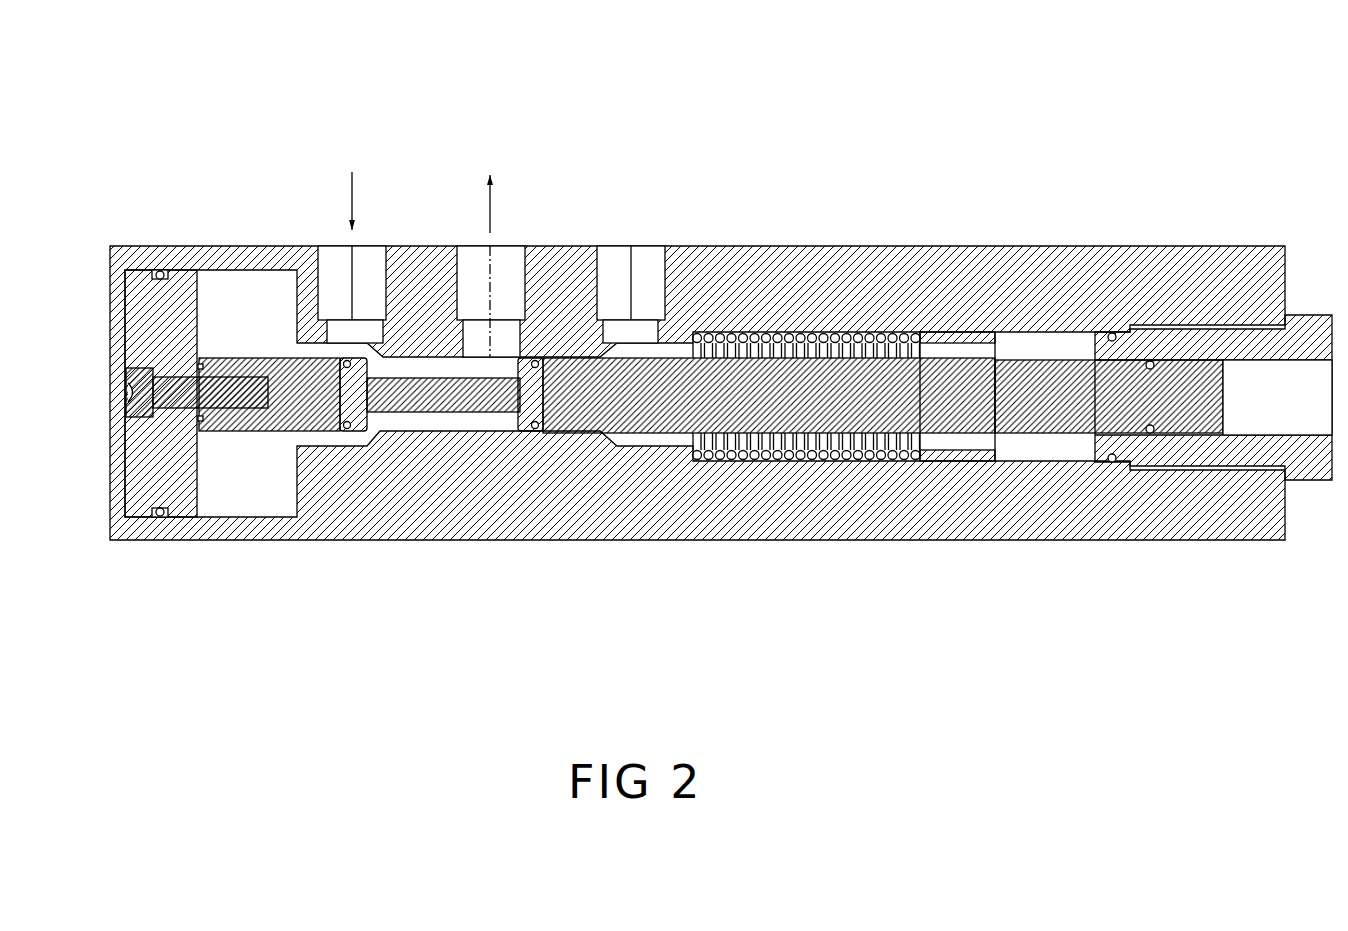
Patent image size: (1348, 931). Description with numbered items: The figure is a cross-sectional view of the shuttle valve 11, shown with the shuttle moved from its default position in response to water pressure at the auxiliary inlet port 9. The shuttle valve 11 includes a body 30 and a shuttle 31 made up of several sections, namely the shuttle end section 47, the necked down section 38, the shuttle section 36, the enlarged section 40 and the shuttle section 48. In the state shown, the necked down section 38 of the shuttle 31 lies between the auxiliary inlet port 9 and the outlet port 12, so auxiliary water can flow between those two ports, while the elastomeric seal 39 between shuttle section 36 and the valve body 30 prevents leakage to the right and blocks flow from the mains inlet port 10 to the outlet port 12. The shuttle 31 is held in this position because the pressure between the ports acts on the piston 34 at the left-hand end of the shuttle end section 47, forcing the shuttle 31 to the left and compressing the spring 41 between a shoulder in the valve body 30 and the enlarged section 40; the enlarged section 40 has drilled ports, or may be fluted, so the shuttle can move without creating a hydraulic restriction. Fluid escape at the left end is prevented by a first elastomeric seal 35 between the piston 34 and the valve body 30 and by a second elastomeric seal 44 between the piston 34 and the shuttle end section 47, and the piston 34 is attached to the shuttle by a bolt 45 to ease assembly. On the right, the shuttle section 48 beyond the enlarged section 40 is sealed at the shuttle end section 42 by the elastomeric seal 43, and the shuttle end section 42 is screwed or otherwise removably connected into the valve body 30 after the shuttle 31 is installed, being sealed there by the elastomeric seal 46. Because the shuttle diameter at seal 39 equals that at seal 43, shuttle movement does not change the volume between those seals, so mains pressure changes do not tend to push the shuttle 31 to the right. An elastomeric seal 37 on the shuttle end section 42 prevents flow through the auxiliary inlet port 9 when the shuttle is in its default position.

The shuttle valve 11 is at (693, 48).
The valve body 30 is at (112, 243).
The auxiliary inlet port 9 is at (370, 246).
The outlet port 12 is at (495, 246).
The mains inlet port 10 is at (633, 246).
The piston 34 is at (163, 300).
The first elastomeric seal 35 is at (158, 514).
The second elastomeric seal 44 is at (200, 366).
The bolt 45 is at (195, 413).
The shuttle end section 47 is at (201, 360).
The elastomeric seal 37 is at (345, 432).
The necked down section 38 is at (442, 416).
The elastomeric seal 39 is at (535, 432).
The shuttle 31 is at (769, 395).
The shuttle section 36 is at (745, 392).
The spring 41 is at (906, 333).
The enlarged section 40 is at (958, 452).
The elastomeric seal 43 is at (1153, 360).
The shuttle section 48 is at (1093, 400).
The elastomeric seal 46 is at (1113, 333).
The shuttle end section 42 is at (1230, 456).